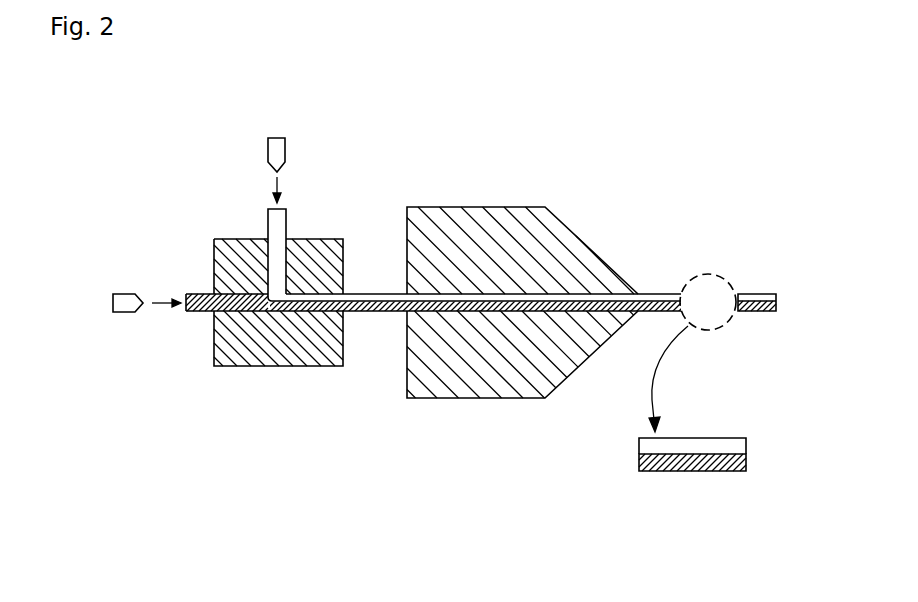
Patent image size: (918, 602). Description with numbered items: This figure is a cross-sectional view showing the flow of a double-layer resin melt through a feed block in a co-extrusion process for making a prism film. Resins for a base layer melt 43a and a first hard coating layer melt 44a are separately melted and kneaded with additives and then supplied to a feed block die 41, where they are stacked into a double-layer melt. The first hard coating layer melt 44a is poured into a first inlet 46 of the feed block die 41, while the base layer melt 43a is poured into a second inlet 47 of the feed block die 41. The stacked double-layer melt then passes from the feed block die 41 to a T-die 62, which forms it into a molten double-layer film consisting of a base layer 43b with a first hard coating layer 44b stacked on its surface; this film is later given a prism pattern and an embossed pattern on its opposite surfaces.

The feed block die 41 is at (232, 258).
The base layer melt 43a is at (123, 307).
The base layer 43b is at (673, 467).
The first hard coating layer melt 44a is at (275, 152).
The first hard coating layer 44b is at (708, 447).
The first inlet 46 is at (282, 224).
The second inlet 47 is at (199, 310).
The T-die 62 is at (462, 230).